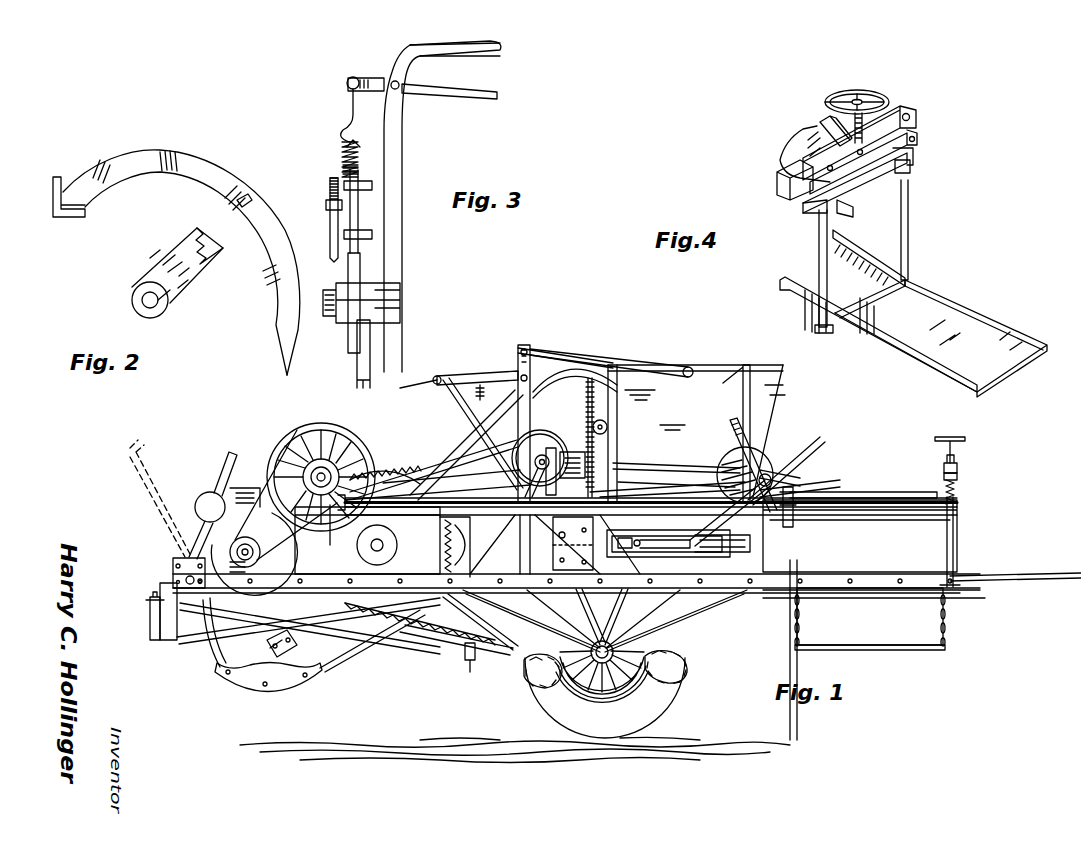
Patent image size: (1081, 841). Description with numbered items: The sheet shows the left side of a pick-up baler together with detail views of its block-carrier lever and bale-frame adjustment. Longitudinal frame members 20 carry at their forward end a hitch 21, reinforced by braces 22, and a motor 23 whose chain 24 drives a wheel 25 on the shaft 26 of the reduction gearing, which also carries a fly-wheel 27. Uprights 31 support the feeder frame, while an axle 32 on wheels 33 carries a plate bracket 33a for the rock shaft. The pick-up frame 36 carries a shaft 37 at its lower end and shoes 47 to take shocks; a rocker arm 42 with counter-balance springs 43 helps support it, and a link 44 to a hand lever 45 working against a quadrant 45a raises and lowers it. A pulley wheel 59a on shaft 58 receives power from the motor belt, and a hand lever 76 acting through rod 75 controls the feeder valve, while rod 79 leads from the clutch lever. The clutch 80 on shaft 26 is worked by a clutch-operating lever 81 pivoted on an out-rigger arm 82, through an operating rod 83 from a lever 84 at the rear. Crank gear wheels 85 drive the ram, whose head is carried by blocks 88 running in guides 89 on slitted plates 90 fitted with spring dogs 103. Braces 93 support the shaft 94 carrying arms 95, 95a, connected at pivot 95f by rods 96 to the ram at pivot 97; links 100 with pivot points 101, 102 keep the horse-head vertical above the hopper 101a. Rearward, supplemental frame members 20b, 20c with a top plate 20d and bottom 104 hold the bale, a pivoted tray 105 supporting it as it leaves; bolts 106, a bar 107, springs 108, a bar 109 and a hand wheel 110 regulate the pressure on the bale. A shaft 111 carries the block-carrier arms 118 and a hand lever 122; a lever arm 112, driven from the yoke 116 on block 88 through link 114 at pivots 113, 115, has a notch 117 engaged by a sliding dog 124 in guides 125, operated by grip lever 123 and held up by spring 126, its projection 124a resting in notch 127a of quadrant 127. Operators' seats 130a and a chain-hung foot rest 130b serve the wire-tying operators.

In FIG. 1, the longitudinal frame members 20 is at (335, 560).
In FIG. 4, the supplemental lower frame members 20b is at (765, 280).
In FIG. 1, the supplemental lower frame members 20b is at (780, 596).
In FIG. 4, the supplemental upper frame members 20c is at (752, 178).
In FIG. 1, the supplemental upper frame members 20c is at (920, 512).
In FIG. 4, the top plate 20d is at (787, 155).
In FIG. 1, the hitch 21 is at (150, 612).
In FIG. 1, the braces 22 is at (200, 640).
In FIG. 1, the motor 23 is at (245, 500).
In FIG. 1, the chain 24 is at (270, 458).
In FIG. 1, the wheel 25 is at (300, 430).
In FIG. 1, the shaft 26 is at (325, 470).
In FIG. 1, the fly-wheel 27 is at (318, 430).
In FIG. 1, the uprights 31 is at (520, 566).
In FIG. 1, the axle 32 is at (602, 653).
In FIG. 1, the wheels 33 is at (660, 710).
In FIG. 1, the plate bracket 33a is at (609, 654).
In FIG. 1, the pick-up frame 36 is at (222, 662).
In FIG. 1, the shaft 37 is at (292, 642).
In FIG. 1, the rocker arm 42 is at (512, 635).
In FIG. 1, the counter-balance springs 43 is at (470, 660).
In FIG. 1, the link 44 is at (355, 640).
In FIG. 1, the hand lever 45 is at (225, 478).
In FIG. 1, the quadrant 45a is at (173, 575).
In FIG. 1, the shoes 47 is at (305, 680).
In FIG. 1, the shaft 58 is at (535, 452).
In FIG. 1, the pulley wheel 59a is at (508, 478).
In FIG. 1, the rod 75 is at (667, 489).
In FIG. 1, the hand lever 76 is at (812, 464).
In FIG. 1, the rod 79 is at (680, 470).
In FIG. 1, the clutch 80 is at (370, 472).
In FIG. 1, the clutch-operating lever 81 is at (356, 535).
In FIG. 1, the out-rigger arm 82 is at (395, 476).
In FIG. 1, the operating rod 83 is at (518, 515).
In FIG. 1, the lever 84 is at (792, 522).
In FIG. 1, the crank gear wheels 85 is at (420, 624).
In FIG. 1, the blocks 88 is at (668, 549).
In FIG. 1, the guides 89 is at (605, 620).
In FIG. 1, the slitted plates 90 is at (712, 600).
In FIG. 1, the braces 93 is at (460, 440).
In FIG. 1, the shaft 94 is at (520, 412).
In FIG. 1, the arms 95 is at (446, 376).
In FIG. 1, the arms 95a is at (570, 400).
In FIG. 1, the pivot 95f is at (433, 378).
In FIG. 1, the rods 96 is at (417, 387).
In FIG. 1, the pivot 97 is at (573, 543).
In FIG. 1, the links 100 is at (595, 362).
In FIG. 1, the pivot point 101 is at (516, 350).
In FIG. 1, the hopper 101a is at (636, 412).
In FIG. 1, the pivot point 102 is at (688, 367).
In FIG. 1, the spring dogs 103 is at (700, 552).
In FIG. 4, the bottom 104 is at (880, 266).
In FIG. 4, the pivoted tray 105 is at (910, 300).
In FIG. 1, the pivoted tray 105 is at (1040, 585).
In FIG. 4, the bolts 106 is at (910, 185).
In FIG. 1, the bolts 106 is at (955, 512).
In FIG. 4, the bar 107 is at (918, 122).
In FIG. 1, the bar 107 is at (960, 462).
In FIG. 4, the springs 108 is at (913, 158).
In FIG. 1, the springs 108 is at (958, 484).
In FIG. 4, the bar 109 is at (918, 138).
In FIG. 1, the bar 109 is at (944, 470).
In FIG. 4, the hand wheel 110 is at (870, 78).
In FIG. 1, the hand wheel 110 is at (962, 437).
In FIG. 2, the shaft 111 is at (150, 302).
In FIG. 3, the shaft 111 is at (400, 300).
In FIG. 1, the shaft 111 is at (778, 470).
In FIG. 3, the lever arm 112 is at (370, 352).
In FIG. 1, the lever arm 112 is at (730, 475).
In FIG. 1, the pivot 113 is at (698, 538).
In FIG. 1, the link 114 is at (672, 538).
In FIG. 1, the pivot 115 is at (637, 538).
In FIG. 1, the yoke 116 is at (622, 536).
In FIG. 3, the notch 117 is at (360, 258).
In FIG. 1, the arms 118 is at (775, 455).
In FIG. 2, the hand lever 122 is at (188, 240).
In FIG. 3, the hand lever 122 is at (438, 46).
In FIG. 1, the hand lever 122 is at (730, 424).
In FIG. 3, the grip lever 123 is at (486, 92).
In FIG. 3, the sliding dog 124 is at (358, 210).
In FIG. 3, the projection 124a is at (326, 206).
In FIG. 3, the guides 125 is at (372, 184).
In FIG. 3, the spring 126 is at (345, 160).
In FIG. 2, the quadrant 127 is at (246, 187).
In FIG. 3, the quadrant 127 is at (330, 236).
In FIG. 2, the notch 127a is at (288, 156).
In FIG. 3, the notch 127a is at (330, 182).
In FIG. 1, the operators' seats 130a is at (893, 590).
In FIG. 1, the foot rest 130b is at (852, 648).